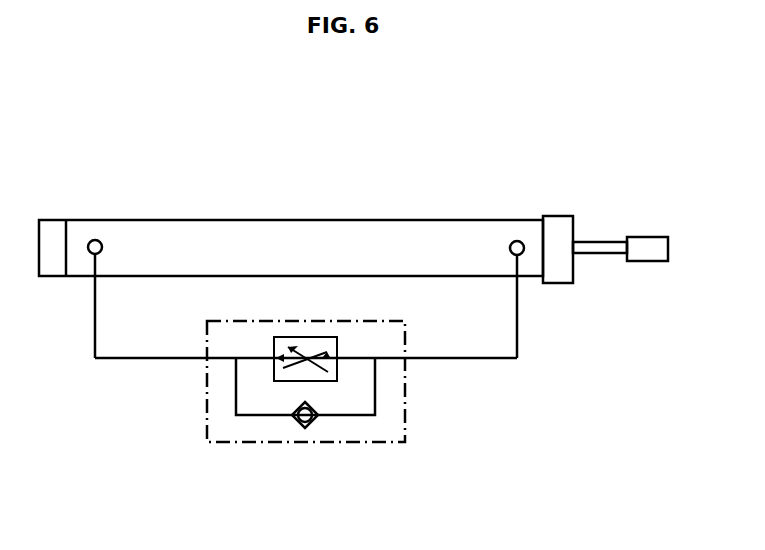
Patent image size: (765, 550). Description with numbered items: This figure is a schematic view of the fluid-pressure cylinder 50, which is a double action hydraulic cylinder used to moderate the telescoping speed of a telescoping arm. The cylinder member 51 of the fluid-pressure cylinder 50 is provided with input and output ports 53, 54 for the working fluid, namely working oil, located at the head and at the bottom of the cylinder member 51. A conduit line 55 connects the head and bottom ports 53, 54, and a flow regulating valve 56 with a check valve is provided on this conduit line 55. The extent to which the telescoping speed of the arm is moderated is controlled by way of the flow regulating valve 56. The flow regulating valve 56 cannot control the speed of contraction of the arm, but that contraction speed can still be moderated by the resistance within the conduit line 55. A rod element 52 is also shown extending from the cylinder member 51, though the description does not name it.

The fluid-pressure cylinder 50 is at (453, 170).
The cylinder member 51 is at (323, 219).
The piston rod 52 is at (611, 241).
The input and output port 53 is at (517, 240).
The input and output port 54 is at (95, 240).
The conduit line 55 is at (127, 362).
The flow regulating valve 56 is at (343, 443).